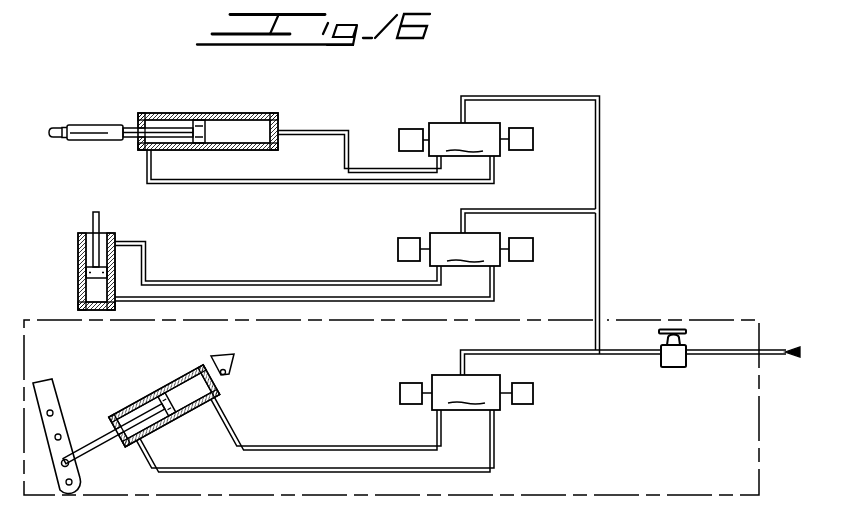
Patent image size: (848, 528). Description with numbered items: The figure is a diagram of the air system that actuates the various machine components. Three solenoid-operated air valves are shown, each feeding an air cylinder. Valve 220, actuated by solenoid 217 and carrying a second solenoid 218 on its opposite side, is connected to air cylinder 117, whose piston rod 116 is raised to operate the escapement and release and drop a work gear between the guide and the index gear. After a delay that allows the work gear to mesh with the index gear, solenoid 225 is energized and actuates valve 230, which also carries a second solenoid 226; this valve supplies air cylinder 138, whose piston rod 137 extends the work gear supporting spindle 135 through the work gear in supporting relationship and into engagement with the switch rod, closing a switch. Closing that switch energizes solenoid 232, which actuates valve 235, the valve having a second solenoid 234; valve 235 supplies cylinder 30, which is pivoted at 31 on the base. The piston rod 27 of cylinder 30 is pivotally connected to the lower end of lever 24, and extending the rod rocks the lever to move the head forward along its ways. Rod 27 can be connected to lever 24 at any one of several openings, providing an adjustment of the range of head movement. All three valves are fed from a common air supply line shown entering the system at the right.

The work gear supporting spindle 135 is at (97, 129).
The piston rod 137 is at (128, 127).
The air cylinder 138 is at (222, 113).
The piston rod 116 is at (100, 223).
The air cylinder 117 is at (83, 275).
The valve 230 is at (464, 139).
The solenoid 225 is at (414, 138).
The control valve 226 is at (516, 135).
The valve 220 is at (465, 249).
The control valve 218 is at (414, 242).
The solenoid 217 is at (516, 245).
The valve 235 is at (466, 392).
The solenoid 232 is at (416, 388).
The control valve 234 is at (516, 386).
The lever 24 is at (50, 398).
The piston rod 27 is at (107, 442).
The cylinder 30 is at (158, 395).
The pivot 31 is at (229, 377).